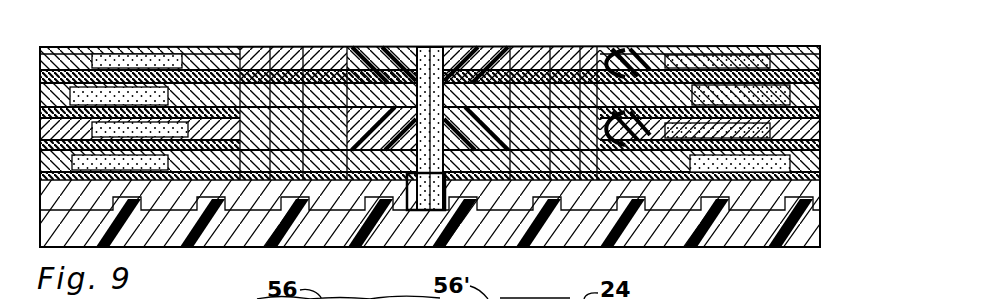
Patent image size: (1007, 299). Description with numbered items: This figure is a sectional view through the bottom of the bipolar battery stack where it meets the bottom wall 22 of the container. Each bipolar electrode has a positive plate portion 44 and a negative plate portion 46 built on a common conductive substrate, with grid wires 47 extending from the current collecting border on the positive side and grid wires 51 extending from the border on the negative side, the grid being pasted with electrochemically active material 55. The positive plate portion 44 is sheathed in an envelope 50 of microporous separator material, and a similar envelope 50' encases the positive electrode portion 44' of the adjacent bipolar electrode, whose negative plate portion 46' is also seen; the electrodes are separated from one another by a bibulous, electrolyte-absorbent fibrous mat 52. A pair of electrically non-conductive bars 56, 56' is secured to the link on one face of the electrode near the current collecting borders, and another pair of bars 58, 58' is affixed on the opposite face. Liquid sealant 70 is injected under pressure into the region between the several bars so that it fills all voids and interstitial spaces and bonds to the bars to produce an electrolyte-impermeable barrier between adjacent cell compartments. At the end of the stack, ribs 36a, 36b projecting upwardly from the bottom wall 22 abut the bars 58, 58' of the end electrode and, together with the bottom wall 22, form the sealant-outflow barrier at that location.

The bottom wall 22 is at (214, 237).
The rib 36a is at (380, 200).
The rib 36b is at (452, 178).
The positive plate portion 44 is at (140, 74).
The positive electrode portion 44' is at (710, 195).
The negative plate portion 46 is at (710, 61).
The negative plate portion 46' is at (273, 162).
The grid wires 47 is at (58, 96).
The envelope 50 is at (126, 50).
The envelope 50' is at (710, 214).
The grid wires 51 is at (214, 105).
The fibrous mat 52 is at (58, 205).
The electrochemically active material 55 is at (65, 97).
The electrically non-conductive bar 56 is at (333, 99).
The electrically non-conductive bar 56' is at (555, 98).
The bar 58 is at (362, 162).
The bar 58' is at (513, 162).
The sealant 70 is at (437, 47).